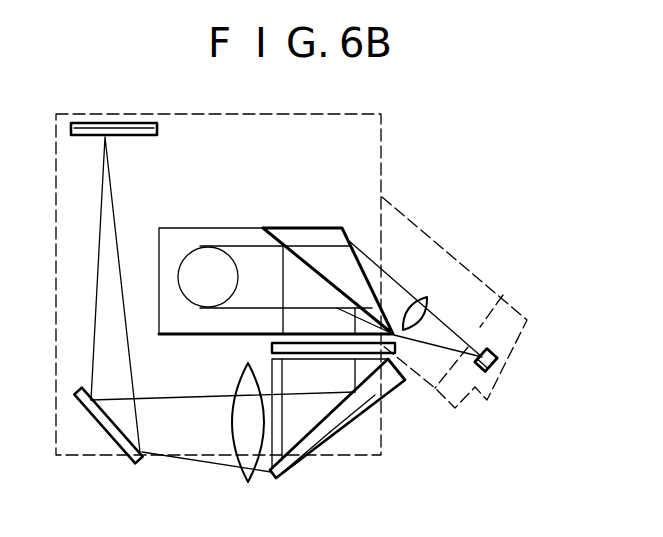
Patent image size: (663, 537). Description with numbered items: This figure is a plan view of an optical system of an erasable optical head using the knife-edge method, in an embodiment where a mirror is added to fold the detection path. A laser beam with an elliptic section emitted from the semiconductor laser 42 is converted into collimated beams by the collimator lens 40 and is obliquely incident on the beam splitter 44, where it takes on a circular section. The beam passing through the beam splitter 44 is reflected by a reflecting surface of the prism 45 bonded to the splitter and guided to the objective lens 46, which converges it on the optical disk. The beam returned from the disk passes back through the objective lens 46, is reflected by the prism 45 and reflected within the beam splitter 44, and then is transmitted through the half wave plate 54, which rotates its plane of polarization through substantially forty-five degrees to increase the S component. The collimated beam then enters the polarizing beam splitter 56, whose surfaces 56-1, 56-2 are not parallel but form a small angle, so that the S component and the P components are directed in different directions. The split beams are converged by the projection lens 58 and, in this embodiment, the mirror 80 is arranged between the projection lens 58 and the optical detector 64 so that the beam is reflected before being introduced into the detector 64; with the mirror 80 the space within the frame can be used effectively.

The collimator lens 40 is at (425, 297).
The semiconductor laser 42 is at (493, 355).
The beam splitter 44 is at (308, 233).
The prism 45 is at (238, 233).
The objective lens 46 is at (200, 246).
The half wave plate 54 is at (272, 347).
The polarizing beam splitter 56 is at (392, 388).
The polarizing beam splitter surface 56-1 is at (290, 440).
The polarizing beam splitter surface 56-2 is at (342, 420).
The projection lens 58 is at (243, 473).
The optical detector 64 is at (157, 129).
The mirror 80 is at (125, 448).